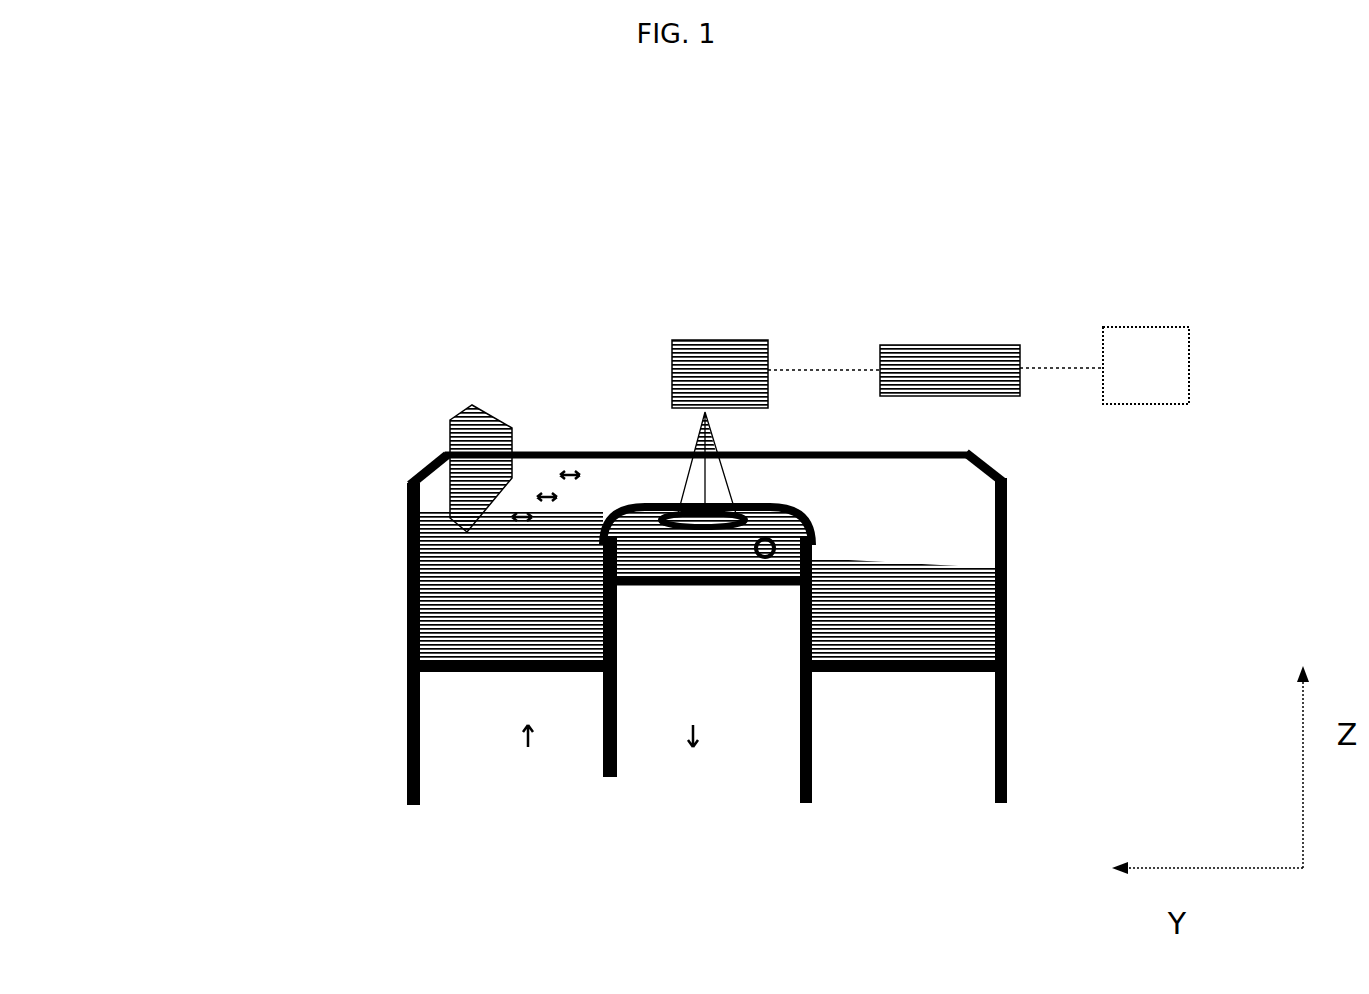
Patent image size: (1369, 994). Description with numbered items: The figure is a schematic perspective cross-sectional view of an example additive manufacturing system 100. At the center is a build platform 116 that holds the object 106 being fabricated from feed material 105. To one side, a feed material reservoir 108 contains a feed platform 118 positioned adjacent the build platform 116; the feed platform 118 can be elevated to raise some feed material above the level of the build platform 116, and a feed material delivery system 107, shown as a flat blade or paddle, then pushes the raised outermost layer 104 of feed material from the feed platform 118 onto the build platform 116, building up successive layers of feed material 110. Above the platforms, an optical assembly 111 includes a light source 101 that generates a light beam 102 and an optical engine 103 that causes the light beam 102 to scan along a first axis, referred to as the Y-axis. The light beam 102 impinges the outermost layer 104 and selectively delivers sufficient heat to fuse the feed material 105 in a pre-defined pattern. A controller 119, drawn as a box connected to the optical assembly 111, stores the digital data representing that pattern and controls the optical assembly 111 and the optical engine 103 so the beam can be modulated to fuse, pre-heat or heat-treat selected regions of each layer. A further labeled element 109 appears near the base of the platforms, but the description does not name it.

The additive manufacturing system 100 is at (268, 398).
The light source 101 is at (950, 362).
The light beam 102 is at (935, 368).
The optical engine 103 is at (697, 364).
The outermost layer of feed material 104 is at (735, 523).
The feed material 105 is at (707, 655).
The object 106 is at (675, 517).
The feed material delivery system 107 is at (515, 458).
The feed material reservoir 108 is at (513, 588).
The platform actuators 109 is at (690, 748).
The layers of feed material 110 is at (903, 612).
The optical assembly 111 is at (672, 293).
The build platform 116 is at (710, 588).
The feed platform 118 is at (472, 675).
The controller 119 is at (1145, 404).